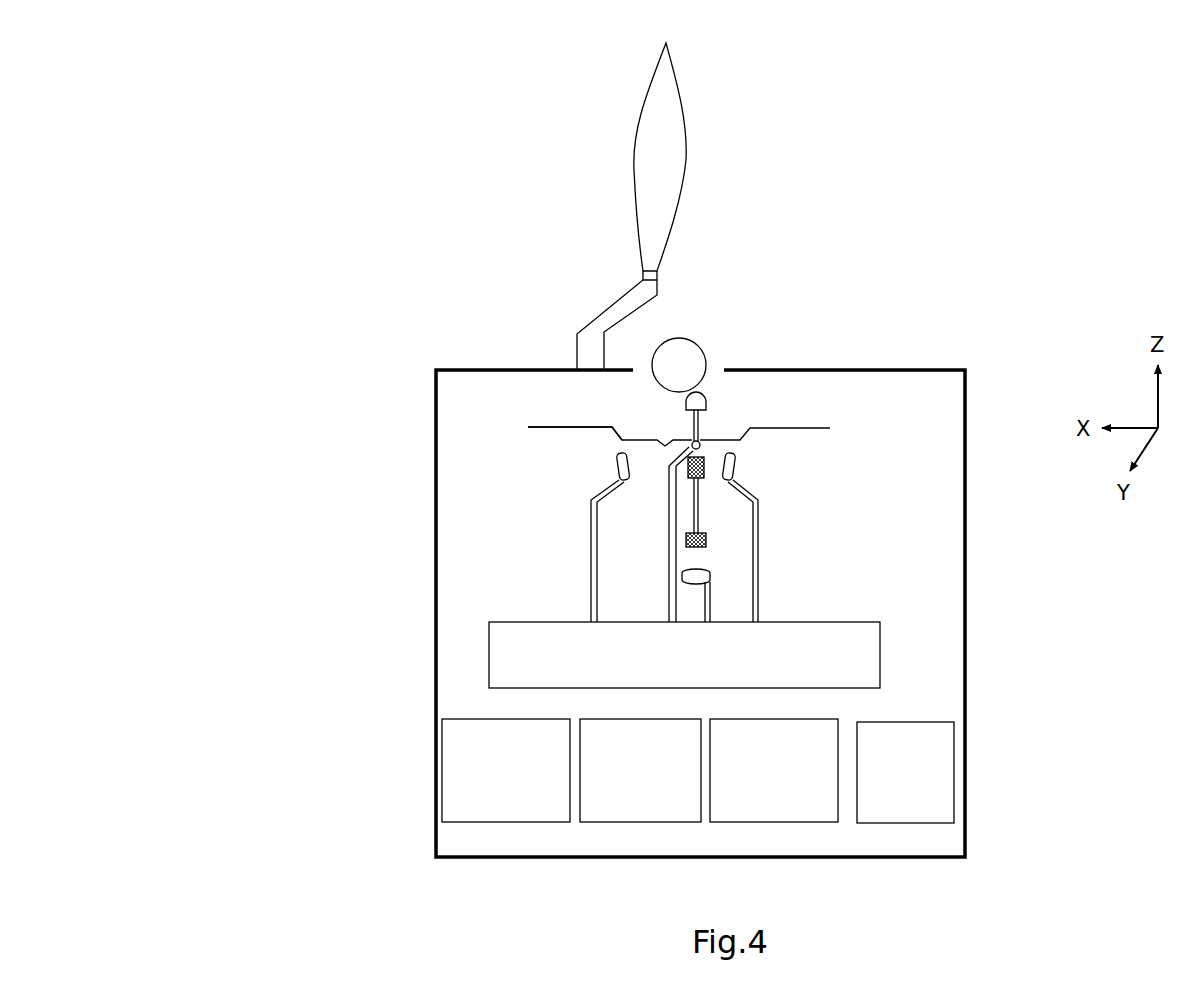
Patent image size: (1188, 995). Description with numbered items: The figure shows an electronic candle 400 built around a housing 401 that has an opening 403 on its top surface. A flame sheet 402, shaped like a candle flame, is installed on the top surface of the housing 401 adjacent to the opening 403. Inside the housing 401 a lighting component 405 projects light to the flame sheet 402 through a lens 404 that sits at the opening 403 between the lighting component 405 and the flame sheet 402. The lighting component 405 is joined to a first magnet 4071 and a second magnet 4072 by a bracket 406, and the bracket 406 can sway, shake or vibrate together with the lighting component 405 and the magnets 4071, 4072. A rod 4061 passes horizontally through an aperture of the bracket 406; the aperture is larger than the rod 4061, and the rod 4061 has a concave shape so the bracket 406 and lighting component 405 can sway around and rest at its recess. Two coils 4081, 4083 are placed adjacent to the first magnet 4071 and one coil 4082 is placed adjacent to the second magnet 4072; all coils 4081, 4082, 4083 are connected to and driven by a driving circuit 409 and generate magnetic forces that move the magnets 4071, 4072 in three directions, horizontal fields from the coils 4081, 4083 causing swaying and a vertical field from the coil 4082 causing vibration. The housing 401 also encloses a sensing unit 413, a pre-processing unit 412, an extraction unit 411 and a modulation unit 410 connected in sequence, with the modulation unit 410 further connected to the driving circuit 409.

The electronic candle 400 is at (267, 125).
The housing 401 is at (507, 370).
The flame sheet 402 is at (686, 172).
The opening 403 is at (721, 354).
The lens 404 is at (679, 338).
The lighting component 405 is at (706, 398).
The bracket 406 is at (700, 430).
The rod 4061 is at (580, 427).
The first magnet 4071 is at (688, 465).
The second magnet 4072 is at (708, 540).
The coil 4081 is at (615, 468).
The coil 4082 is at (712, 577).
The coil 4083 is at (735, 470).
The driving circuit 409 is at (684, 655).
The modulation unit 410 is at (506, 770).
The extraction unit 411 is at (640, 770).
The pre-processing unit 412 is at (772, 823).
The sensing unit 413 is at (905, 772).